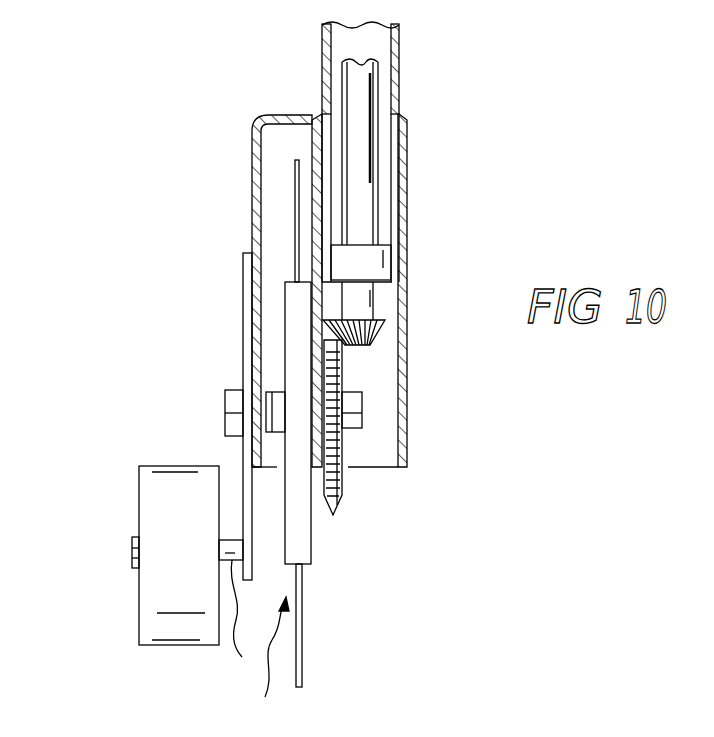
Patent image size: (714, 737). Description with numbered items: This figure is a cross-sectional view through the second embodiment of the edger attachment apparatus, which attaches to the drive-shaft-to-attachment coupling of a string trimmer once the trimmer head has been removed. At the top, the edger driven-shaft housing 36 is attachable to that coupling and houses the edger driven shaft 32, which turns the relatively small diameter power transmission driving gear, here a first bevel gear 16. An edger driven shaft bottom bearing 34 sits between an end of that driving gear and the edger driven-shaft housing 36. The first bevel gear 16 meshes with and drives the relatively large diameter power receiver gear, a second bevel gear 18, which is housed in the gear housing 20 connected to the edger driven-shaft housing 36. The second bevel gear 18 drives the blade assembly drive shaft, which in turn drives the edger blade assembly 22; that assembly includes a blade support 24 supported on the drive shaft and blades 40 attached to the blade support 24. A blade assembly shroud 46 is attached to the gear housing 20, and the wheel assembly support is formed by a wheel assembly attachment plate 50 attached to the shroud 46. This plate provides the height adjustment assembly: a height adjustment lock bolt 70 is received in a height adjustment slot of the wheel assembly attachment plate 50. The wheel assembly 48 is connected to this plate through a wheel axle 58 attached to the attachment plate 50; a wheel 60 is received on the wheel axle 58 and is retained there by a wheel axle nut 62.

The first bevel gear 16 is at (378, 340).
The second bevel gear 18 is at (335, 495).
The gear housing 20 is at (407, 425).
The edger blade assembly 22 is at (267, 666).
The blade support 24 is at (302, 536).
The edger driven shaft 32 is at (372, 97).
The edger driven shaft bottom bearing 34 is at (372, 262).
The edger driven-shaft housing 36 is at (400, 46).
The blades 40 is at (292, 170).
The blade assembly shroud 46 is at (252, 205).
The wheel assembly 48 is at (161, 468).
The wheel assembly attachment plate 50 is at (243, 275).
The wheel axle 58 is at (234, 629).
The wheel 60 is at (158, 598).
The wheel axle nut 62 is at (133, 541).
The height adjustment lock bolt 70 is at (230, 390).